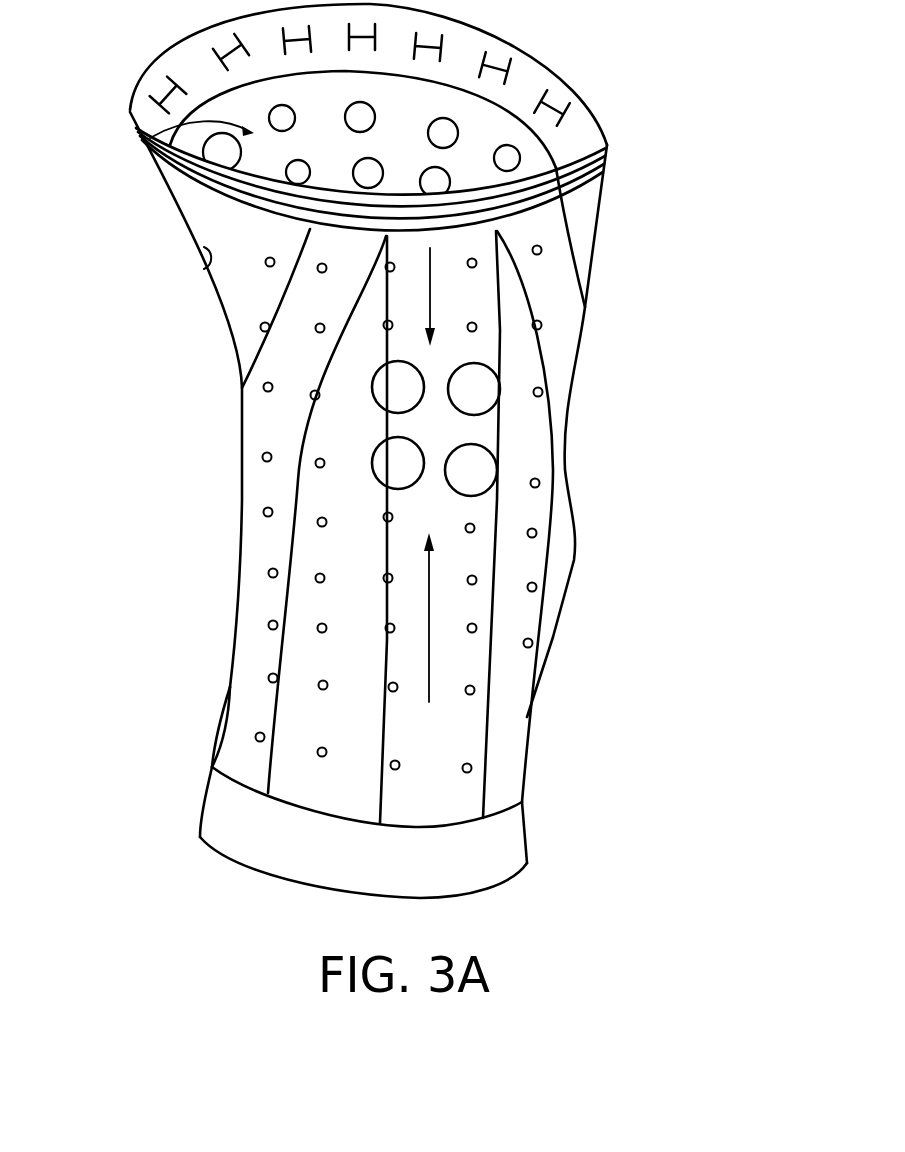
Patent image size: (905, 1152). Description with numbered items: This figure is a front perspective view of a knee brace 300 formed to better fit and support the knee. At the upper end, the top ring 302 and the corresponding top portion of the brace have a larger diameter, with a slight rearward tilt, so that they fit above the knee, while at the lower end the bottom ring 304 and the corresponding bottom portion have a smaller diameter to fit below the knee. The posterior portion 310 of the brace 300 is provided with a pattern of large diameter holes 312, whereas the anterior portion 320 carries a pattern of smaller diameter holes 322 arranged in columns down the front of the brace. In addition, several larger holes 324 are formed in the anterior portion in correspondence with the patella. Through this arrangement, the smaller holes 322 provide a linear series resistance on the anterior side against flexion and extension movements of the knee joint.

The brace 300 is at (619, 81).
The top ring 302 is at (606, 152).
The bottom ring 304 is at (523, 833).
The posterior portion 310 is at (145, 138).
The large diameter holes 312 is at (340, 120).
The anterior portion 320 is at (268, 483).
The smaller diameter holes 322 is at (541, 249).
The larger holes 324 is at (484, 388).